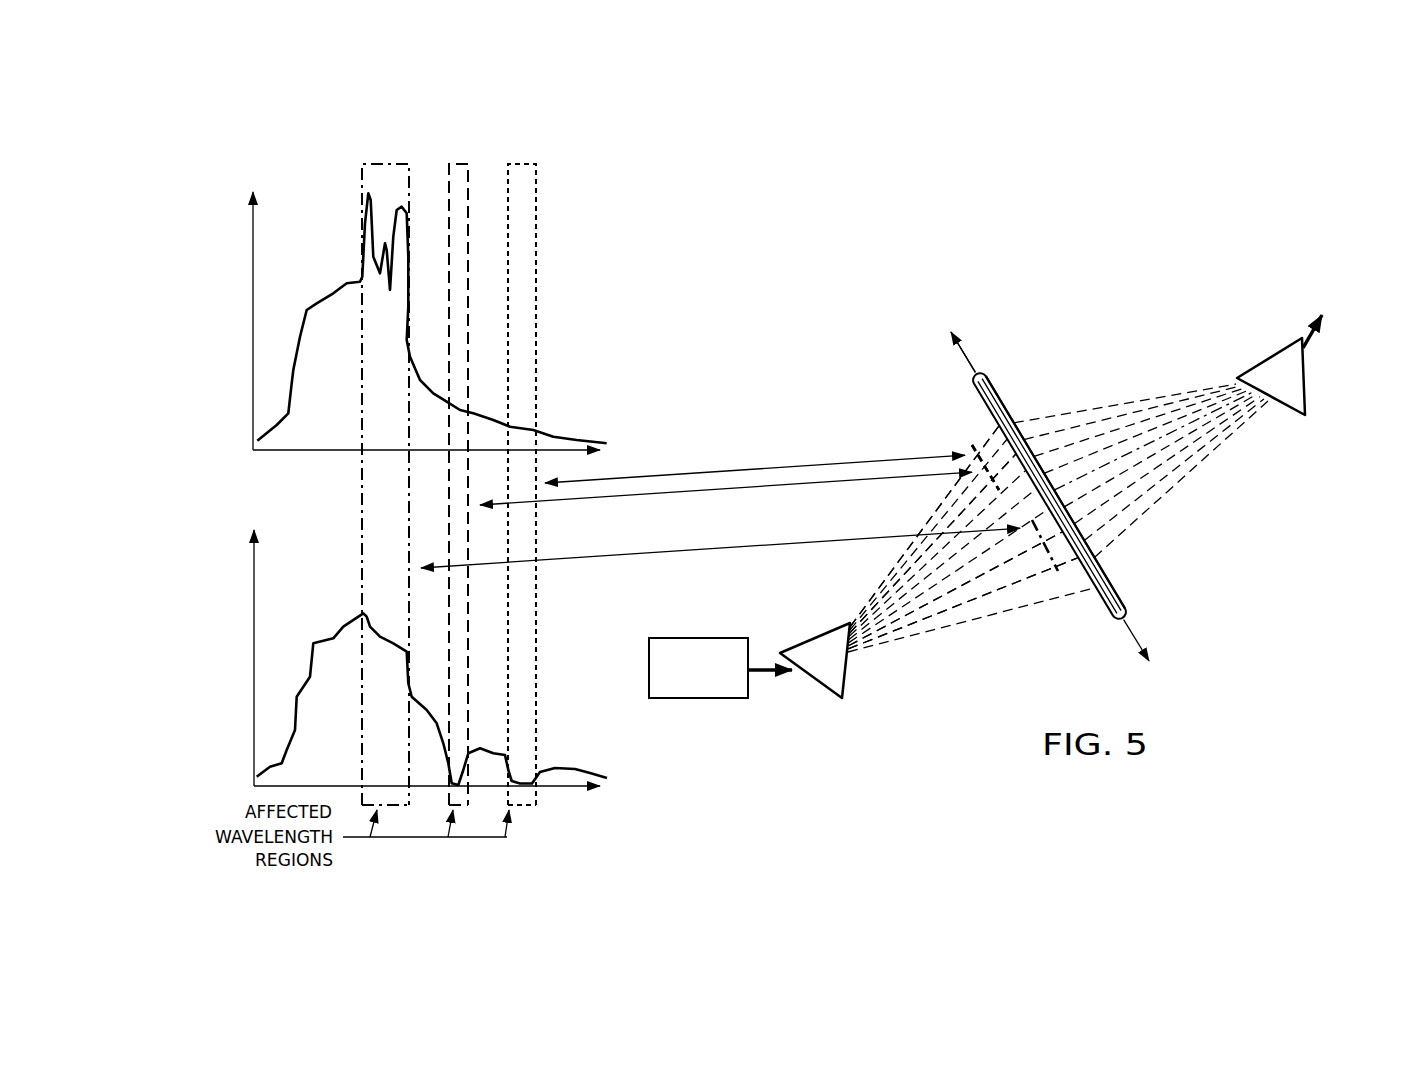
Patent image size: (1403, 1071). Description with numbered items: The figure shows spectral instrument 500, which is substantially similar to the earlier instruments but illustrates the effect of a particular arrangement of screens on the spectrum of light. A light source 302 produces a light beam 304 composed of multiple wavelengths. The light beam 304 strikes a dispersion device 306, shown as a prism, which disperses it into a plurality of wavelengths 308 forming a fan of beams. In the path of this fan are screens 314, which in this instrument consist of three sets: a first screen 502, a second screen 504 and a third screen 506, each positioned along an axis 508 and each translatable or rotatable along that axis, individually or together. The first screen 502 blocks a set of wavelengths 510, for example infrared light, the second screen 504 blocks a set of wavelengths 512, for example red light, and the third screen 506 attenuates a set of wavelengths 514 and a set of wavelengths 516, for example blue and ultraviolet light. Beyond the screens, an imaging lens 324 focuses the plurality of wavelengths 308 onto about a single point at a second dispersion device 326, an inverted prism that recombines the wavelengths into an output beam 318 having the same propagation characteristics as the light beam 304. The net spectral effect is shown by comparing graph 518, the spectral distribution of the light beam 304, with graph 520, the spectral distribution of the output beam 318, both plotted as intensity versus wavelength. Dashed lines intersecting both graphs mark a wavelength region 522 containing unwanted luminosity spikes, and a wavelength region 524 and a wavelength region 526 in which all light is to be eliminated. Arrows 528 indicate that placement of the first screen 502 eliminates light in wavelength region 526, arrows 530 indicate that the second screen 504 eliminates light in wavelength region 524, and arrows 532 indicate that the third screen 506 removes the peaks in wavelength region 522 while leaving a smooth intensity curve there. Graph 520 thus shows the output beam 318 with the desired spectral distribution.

The light source 302 is at (716, 680).
The light beam 304 is at (768, 673).
The dispersion device 306 is at (813, 637).
The plurality of wavelengths 308 is at (910, 647).
The screens 314 is at (893, 414).
The output beam 318 is at (1318, 334).
The imaging lens 324 is at (997, 385).
The second dispersion device 326 is at (1270, 353).
The spectral instrument 500 is at (1065, 220).
The first screen 502 is at (972, 445).
The second screen 504 is at (998, 485).
The third screen 506 is at (1047, 572).
The axis 508 is at (973, 350).
The set of wavelengths 510 is at (868, 613).
The set of wavelengths 512 is at (897, 583).
The set of wavelengths 514 is at (928, 601).
The set of wavelengths 516 is at (975, 591).
The graph 518 is at (243, 317).
The graph 520 is at (243, 653).
The wavelength region 522 is at (372, 161).
The wavelength region 524 is at (458, 161).
The wavelength region 526 is at (522, 161).
The arrows 528 is at (790, 466).
The arrows 530 is at (718, 491).
The arrows 532 is at (716, 550).